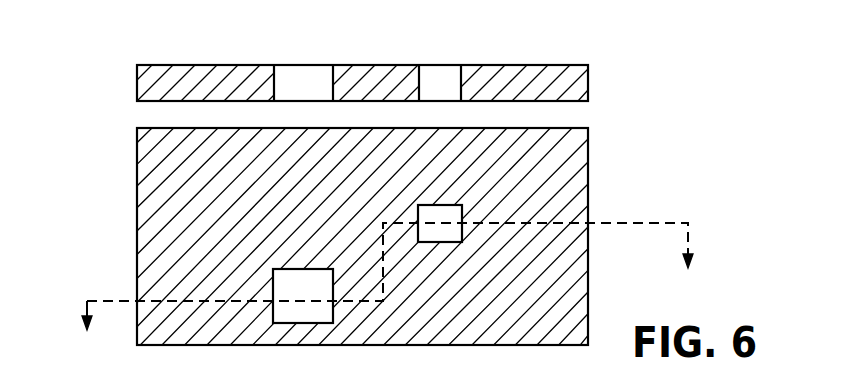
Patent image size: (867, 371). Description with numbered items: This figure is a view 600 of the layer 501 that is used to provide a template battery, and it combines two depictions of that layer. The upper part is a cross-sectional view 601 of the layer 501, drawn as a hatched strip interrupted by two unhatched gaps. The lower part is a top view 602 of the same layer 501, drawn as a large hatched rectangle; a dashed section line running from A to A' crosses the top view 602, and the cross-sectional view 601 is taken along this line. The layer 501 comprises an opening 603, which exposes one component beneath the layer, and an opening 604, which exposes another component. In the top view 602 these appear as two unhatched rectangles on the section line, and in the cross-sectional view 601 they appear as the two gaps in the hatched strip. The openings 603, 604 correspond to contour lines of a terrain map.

The view 600 is at (582, 22).
The layer 501 is at (137, 81).
The cross-sectional view 601 is at (588, 78).
The top view 602 is at (588, 262).
The opening 603 is at (439, 70).
The opening 604 is at (307, 72).